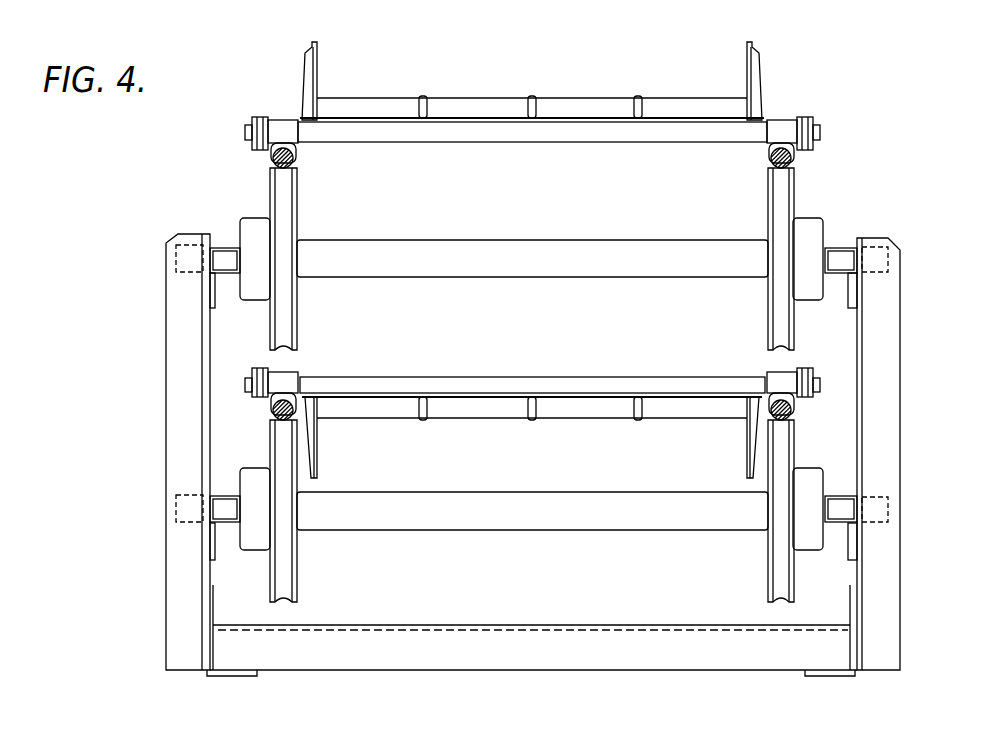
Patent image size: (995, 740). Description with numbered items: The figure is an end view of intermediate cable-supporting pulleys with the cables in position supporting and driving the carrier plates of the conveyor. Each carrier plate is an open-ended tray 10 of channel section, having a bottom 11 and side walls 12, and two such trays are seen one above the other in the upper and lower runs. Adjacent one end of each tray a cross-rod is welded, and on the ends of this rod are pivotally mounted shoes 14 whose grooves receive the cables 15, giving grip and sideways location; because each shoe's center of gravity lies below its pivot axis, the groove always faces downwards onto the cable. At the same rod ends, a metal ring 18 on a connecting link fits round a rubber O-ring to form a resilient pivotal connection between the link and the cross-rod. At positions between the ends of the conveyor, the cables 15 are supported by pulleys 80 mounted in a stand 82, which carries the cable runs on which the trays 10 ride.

The tray 10 is at (500, 143).
The bottom 11 is at (483, 408).
The side walls 12 is at (316, 57).
The shoes 14 is at (285, 118).
The cables 15 is at (295, 160).
The metal ring 18 is at (260, 119).
The pulleys 80 is at (268, 192).
The stand 82 is at (900, 420).